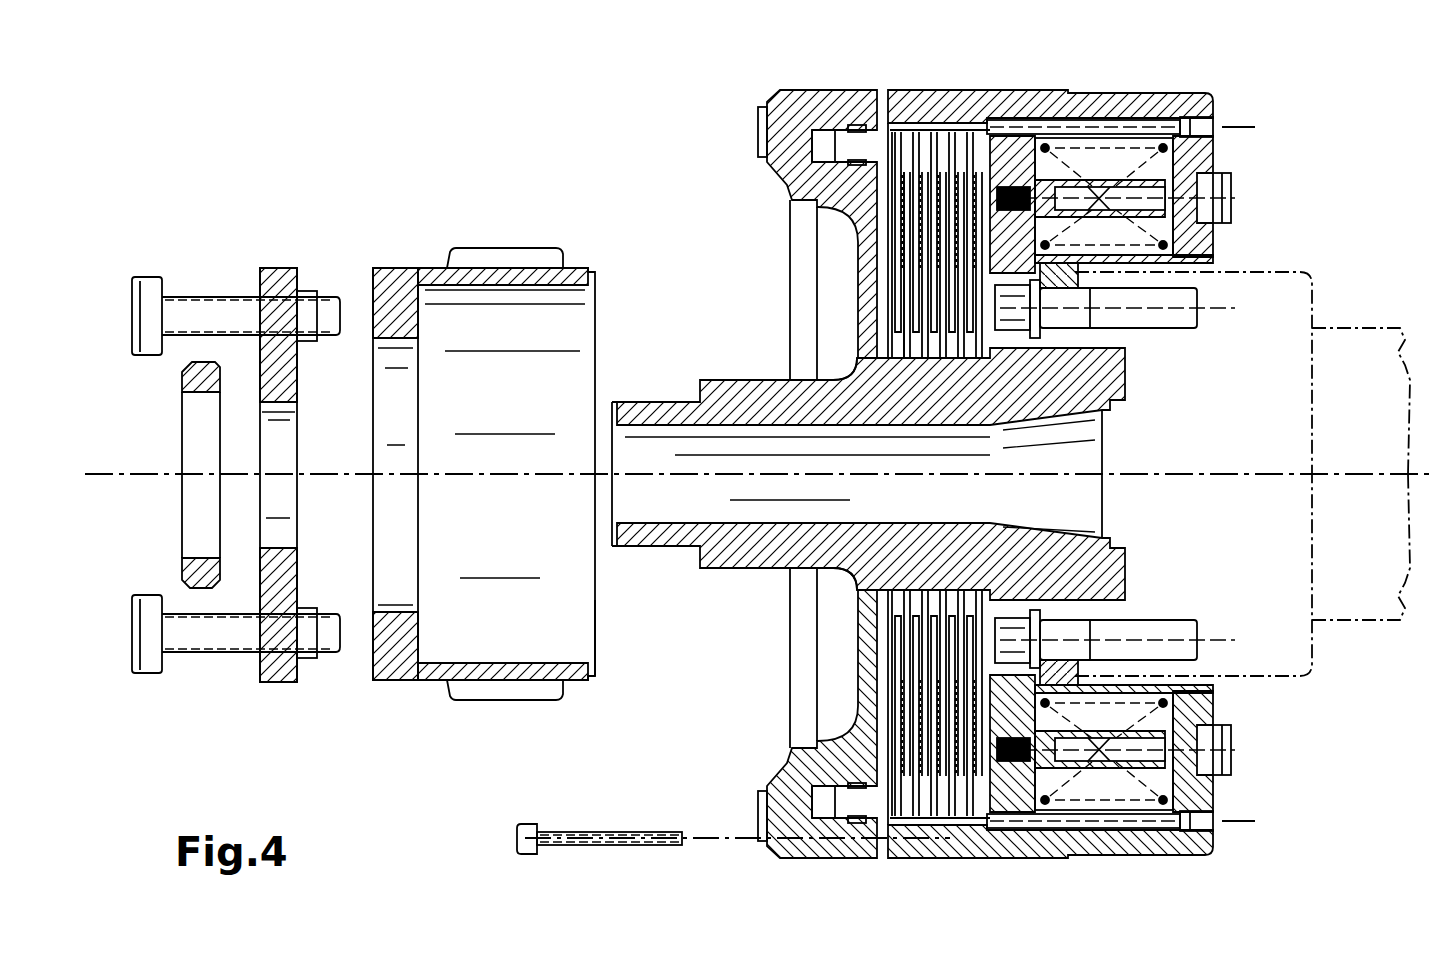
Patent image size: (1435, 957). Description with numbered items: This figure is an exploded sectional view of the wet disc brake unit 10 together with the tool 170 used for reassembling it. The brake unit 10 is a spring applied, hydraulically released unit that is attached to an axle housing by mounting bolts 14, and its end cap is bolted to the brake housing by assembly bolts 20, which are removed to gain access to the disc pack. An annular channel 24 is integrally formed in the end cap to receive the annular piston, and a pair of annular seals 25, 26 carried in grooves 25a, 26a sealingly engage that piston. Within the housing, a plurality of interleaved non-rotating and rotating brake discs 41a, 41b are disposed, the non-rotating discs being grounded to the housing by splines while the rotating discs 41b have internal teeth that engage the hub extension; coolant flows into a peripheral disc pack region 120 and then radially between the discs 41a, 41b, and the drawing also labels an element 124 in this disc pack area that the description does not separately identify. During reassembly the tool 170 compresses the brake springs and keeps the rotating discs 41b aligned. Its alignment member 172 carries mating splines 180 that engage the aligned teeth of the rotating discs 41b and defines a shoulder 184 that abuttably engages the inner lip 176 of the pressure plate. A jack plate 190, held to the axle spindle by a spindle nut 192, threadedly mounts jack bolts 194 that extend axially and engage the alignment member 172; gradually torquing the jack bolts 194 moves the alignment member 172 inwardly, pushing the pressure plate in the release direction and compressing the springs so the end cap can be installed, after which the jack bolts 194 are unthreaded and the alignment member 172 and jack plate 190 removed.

The wet disc brake unit 10 is at (1270, 158).
The mounting bolts 14 is at (1197, 298).
The assembly bolts 20 is at (604, 846).
The annular channel 24 is at (812, 143).
The annular seal 25 is at (817, 200).
The groove 25a is at (812, 758).
The annular seal 26 is at (857, 128).
The groove 26a is at (850, 820).
The non-rotating brake discs 41a is at (952, 258).
The rotating brake discs 41b is at (914, 265).
The disc pack region 120 is at (937, 126).
The clutch plate pack 124 is at (925, 672).
The tool 170 is at (188, 160).
The alignment member 172 is at (400, 676).
The shoulder or lip 176 is at (985, 700).
The mating splines 180 is at (503, 690).
The shoulder 184 is at (596, 678).
The jack plate 190 is at (270, 683).
The spindle nut 192 is at (192, 382).
The jack bolts 194 is at (146, 292).